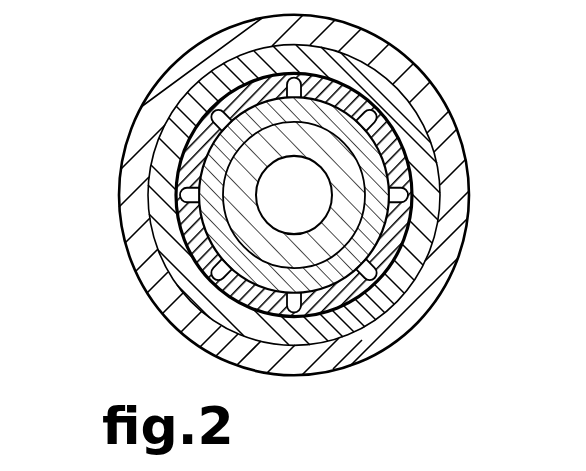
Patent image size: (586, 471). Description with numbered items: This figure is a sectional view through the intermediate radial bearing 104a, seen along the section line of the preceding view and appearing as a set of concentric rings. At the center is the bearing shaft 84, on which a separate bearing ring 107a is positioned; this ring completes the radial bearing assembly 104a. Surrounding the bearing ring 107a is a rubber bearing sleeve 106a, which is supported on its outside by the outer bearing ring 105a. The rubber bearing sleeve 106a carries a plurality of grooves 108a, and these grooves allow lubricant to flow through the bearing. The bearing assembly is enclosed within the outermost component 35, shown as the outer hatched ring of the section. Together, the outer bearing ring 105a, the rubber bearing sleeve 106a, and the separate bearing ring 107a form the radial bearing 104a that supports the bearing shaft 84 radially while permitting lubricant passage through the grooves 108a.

The outer tube 35 is at (453, 124).
The bearing shaft 84 is at (257, 178).
The intermediate radial bearing 104a is at (184, 273).
The outer bearing ring 105a is at (427, 216).
The rubber bearing sleeve 106a is at (384, 262).
The separate bearing ring 107a is at (370, 226).
The grooves 108a is at (428, 180).